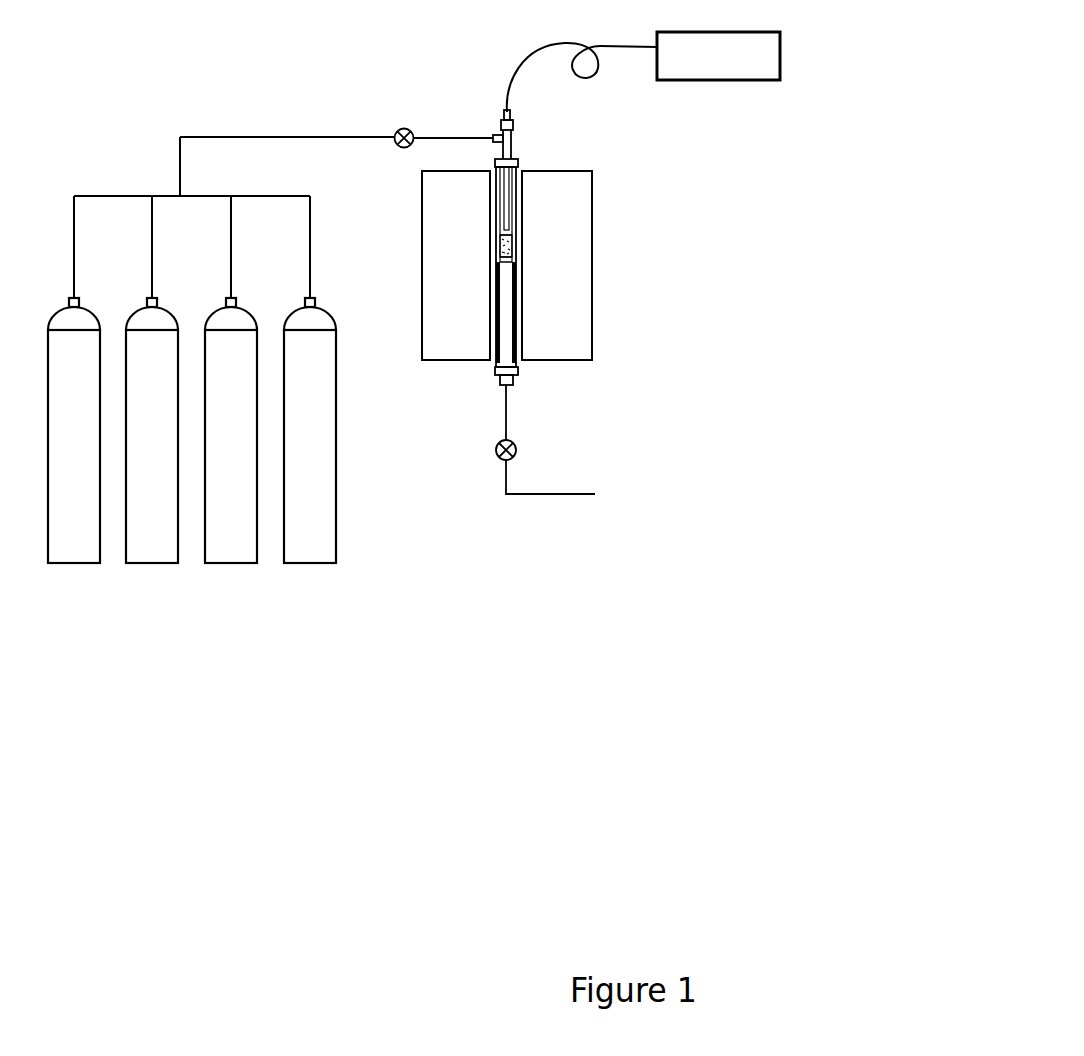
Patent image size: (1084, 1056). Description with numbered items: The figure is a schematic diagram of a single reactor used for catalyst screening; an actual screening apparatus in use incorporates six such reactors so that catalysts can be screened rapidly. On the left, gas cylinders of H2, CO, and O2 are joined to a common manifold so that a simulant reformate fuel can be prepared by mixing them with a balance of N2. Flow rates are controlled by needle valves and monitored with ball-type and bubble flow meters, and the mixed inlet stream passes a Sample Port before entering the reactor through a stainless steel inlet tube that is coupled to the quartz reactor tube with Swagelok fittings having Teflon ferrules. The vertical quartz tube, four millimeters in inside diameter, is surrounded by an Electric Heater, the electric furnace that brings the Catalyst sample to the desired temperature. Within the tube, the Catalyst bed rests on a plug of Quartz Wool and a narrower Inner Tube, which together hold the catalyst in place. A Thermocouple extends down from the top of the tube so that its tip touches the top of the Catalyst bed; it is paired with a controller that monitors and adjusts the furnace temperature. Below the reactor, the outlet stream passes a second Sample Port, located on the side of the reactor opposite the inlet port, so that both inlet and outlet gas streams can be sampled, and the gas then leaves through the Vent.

The hydrogen cylinder H2 is at (74, 430).
The carbon monoxide cylinder CO is at (152, 430).
The oxygen cylinder O2 is at (231, 430).
The nitrogen cylinder N2 is at (310, 430).
The sample port Sample Port is at (401, 121).
The vent Vent is at (584, 446).
The electric furnace Electric Heater is at (577, 248).
The inner tube Inner Tube is at (510, 330).
The thermocouple Thermocouple is at (510, 195).
The catalyst sample Catalyst is at (510, 243).
The quartz wool plug Quartz Wool is at (510, 260).